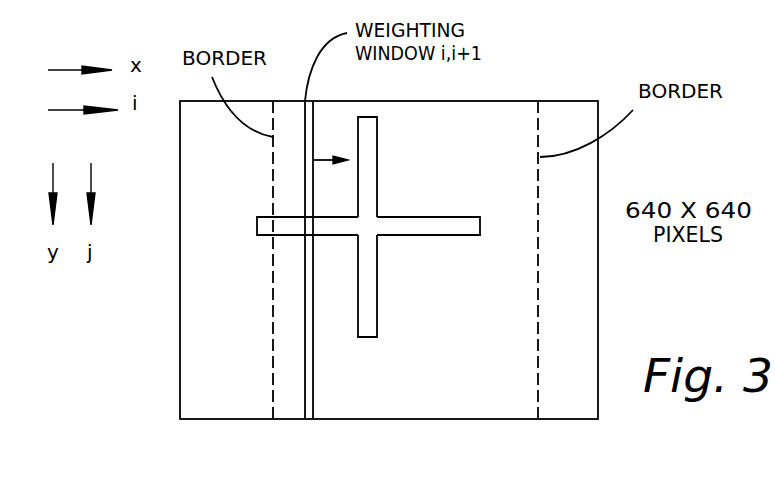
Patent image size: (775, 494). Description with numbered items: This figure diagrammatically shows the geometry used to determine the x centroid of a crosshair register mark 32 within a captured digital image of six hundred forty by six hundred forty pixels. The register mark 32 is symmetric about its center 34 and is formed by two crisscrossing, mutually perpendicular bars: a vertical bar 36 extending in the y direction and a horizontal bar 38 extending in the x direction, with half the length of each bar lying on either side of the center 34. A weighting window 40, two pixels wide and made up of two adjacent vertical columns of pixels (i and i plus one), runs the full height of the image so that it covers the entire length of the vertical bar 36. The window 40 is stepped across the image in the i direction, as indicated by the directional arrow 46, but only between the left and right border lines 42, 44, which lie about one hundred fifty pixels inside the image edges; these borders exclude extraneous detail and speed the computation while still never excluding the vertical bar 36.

The register mark 32 is at (373, 227).
The center 34 is at (363, 230).
The vertical bar 36 is at (368, 185).
The horizontal bar 38 is at (428, 225).
The weighting window 40 is at (318, 361).
The left border line 42 is at (273, 303).
The right border line 44 is at (540, 317).
The directional arrow 46 is at (315, 160).